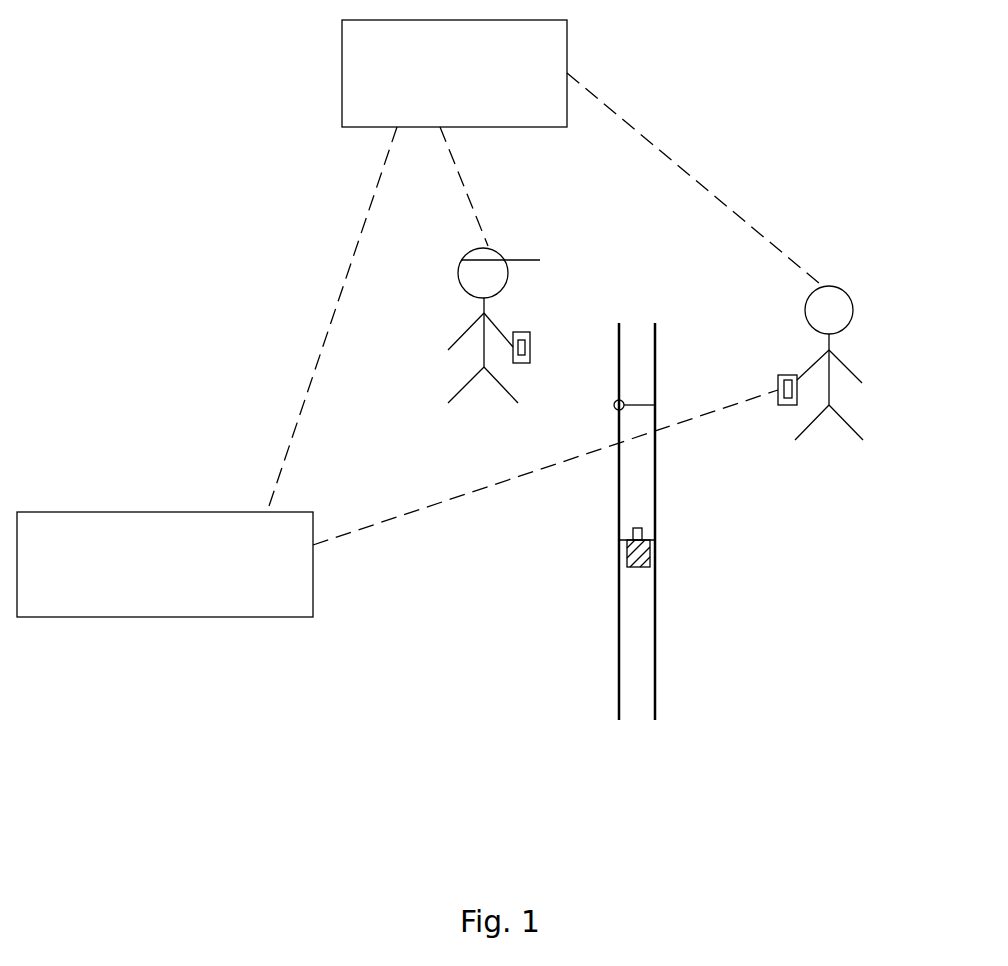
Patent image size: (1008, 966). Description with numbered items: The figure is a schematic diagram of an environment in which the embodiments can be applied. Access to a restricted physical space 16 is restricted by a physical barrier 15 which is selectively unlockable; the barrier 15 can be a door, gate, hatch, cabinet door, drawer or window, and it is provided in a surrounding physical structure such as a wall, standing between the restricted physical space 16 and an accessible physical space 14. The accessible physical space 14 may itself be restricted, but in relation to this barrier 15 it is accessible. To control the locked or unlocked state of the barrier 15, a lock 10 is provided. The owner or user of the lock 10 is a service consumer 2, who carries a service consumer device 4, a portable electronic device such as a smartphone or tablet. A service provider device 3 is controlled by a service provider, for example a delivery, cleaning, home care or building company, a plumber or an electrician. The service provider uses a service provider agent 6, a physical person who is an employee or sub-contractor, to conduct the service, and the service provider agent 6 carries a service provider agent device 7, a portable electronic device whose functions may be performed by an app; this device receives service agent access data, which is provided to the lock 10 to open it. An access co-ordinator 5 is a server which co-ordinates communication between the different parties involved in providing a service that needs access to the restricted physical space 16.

The service consumer 2 is at (832, 287).
The service provider device 3 is at (446, 52).
The service consumer device 4 is at (778, 378).
The access co-ordinator 5 is at (156, 560).
The service provider agent 6 is at (494, 251).
The service provider agent device 7 is at (530, 335).
The lock 10 is at (650, 543).
The accessible physical space 14 is at (472, 671).
The physical barrier 15 is at (633, 458).
The restricted physical space 16 is at (828, 656).